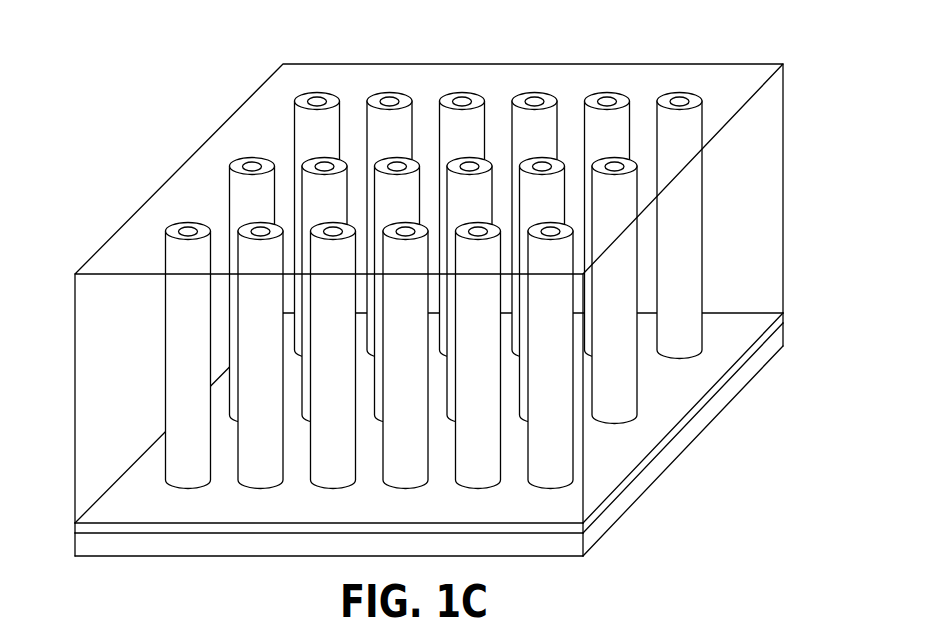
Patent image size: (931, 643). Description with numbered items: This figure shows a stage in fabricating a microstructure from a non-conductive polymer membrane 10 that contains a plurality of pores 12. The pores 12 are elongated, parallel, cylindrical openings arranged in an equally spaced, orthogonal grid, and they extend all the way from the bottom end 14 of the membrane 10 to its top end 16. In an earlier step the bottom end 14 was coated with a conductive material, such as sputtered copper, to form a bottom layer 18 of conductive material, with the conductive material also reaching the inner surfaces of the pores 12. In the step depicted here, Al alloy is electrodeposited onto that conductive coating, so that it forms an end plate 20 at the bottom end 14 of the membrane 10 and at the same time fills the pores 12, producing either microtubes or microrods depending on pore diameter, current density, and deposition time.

The non-conductive polymer membrane 10 is at (425, 288).
The pores 12 is at (603, 95).
The bottom end 14 is at (620, 488).
The top end 16 is at (119, 247).
The bottom layer of conductive material 18 is at (655, 456).
The end plate 20 is at (712, 408).